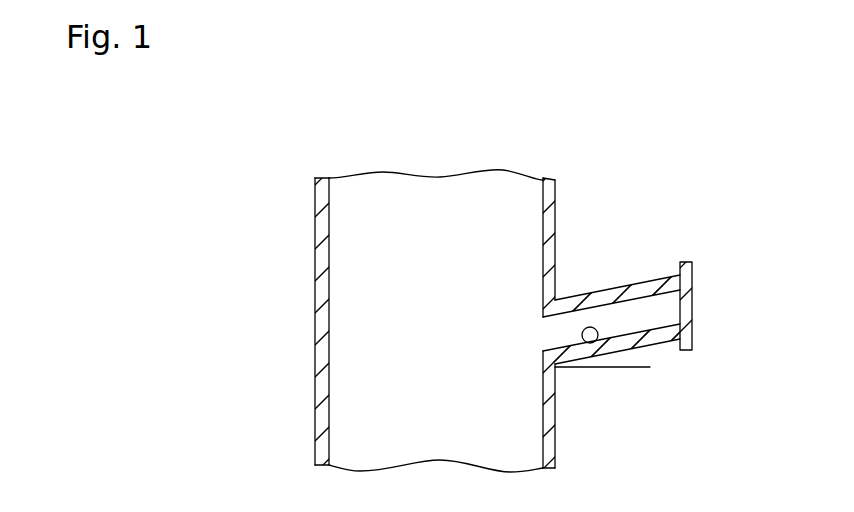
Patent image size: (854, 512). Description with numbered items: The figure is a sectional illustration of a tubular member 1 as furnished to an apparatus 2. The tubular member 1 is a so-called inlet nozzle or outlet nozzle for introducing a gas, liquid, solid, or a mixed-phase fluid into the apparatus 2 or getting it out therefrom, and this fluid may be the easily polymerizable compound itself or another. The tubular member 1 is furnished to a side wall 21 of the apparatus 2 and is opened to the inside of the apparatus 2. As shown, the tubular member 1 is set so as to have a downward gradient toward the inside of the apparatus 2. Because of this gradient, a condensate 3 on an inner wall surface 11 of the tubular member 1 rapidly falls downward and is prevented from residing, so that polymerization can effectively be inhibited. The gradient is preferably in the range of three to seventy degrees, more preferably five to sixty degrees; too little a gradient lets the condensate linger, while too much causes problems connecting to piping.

The tubular member 1 is at (537, 256).
The inner wall surface 11 is at (627, 334).
The apparatus 2 is at (427, 256).
The side wall 21 is at (554, 202).
The condensate 3 is at (583, 330).